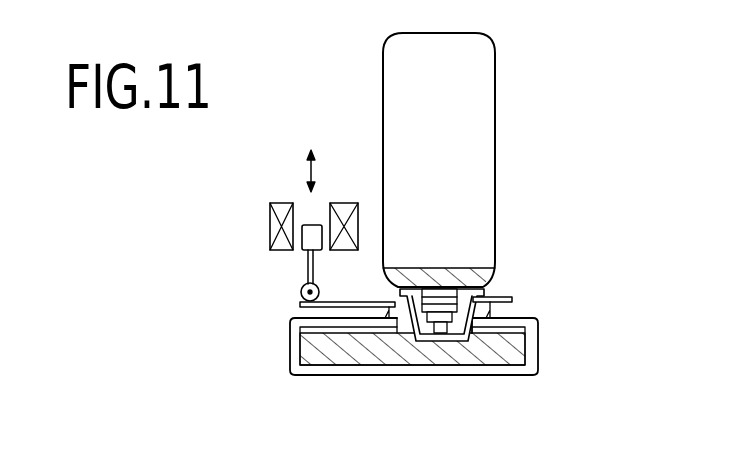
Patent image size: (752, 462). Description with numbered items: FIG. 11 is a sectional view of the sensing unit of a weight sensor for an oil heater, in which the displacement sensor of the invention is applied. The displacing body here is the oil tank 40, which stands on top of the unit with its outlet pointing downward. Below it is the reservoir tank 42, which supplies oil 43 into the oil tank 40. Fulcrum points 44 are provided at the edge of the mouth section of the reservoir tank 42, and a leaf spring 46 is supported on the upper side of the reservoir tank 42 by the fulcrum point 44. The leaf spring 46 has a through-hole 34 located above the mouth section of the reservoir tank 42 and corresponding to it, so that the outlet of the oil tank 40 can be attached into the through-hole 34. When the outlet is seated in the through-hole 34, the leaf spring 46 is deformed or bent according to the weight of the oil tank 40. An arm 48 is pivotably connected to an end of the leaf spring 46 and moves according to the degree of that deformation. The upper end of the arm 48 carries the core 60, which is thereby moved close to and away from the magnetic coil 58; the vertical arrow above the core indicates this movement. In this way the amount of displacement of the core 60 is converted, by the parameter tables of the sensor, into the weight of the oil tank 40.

The oil tank 40 is at (495, 120).
The magnetic coil 58 is at (270, 220).
The core 60 is at (315, 225).
The arm 48 is at (307, 272).
The leaf spring 46 is at (300, 303).
The fulcrum point 44 is at (296, 316).
The through-hole 34 is at (405, 315).
The oil 43 is at (513, 345).
The reservoir tank 42 is at (538, 375).